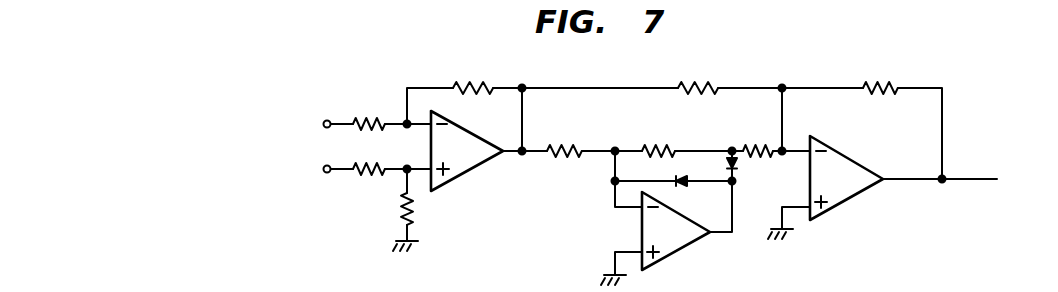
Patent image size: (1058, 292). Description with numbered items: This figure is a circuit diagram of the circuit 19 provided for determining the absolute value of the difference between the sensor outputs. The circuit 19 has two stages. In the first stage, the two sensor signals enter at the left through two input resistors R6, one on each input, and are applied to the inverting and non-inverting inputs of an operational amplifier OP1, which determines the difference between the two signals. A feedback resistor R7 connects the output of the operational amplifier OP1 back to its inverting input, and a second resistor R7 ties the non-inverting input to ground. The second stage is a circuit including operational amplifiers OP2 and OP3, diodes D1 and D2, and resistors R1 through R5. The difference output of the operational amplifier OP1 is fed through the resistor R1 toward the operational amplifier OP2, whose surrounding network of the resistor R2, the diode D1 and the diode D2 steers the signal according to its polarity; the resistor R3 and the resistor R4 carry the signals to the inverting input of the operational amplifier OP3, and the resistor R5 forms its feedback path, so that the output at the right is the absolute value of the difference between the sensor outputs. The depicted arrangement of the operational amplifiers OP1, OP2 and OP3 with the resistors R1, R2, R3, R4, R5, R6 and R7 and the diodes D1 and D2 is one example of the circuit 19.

The circuit 19 is at (808, 52).
The resistor R1 is at (564, 141).
The resistor R2 is at (658, 141).
The resistor R3 is at (757, 141).
The resistor R4 is at (698, 75).
The resistor R5 is at (880, 75).
The resistor R6 is at (369, 134).
The resistor R7 is at (447, 144).
The diode D1 is at (683, 188).
The diode D2 is at (739, 169).
The operational amplifier OP1 is at (487, 164).
The operational amplifier OP2 is at (695, 244).
The operational amplifier OP3 is at (861, 194).